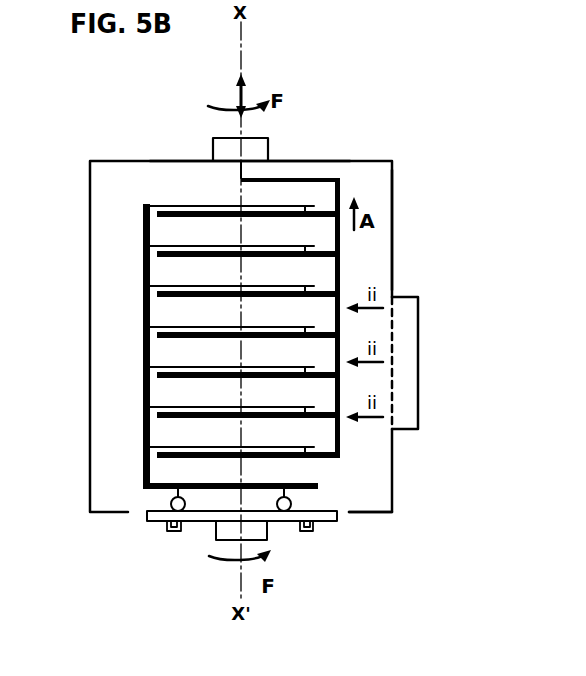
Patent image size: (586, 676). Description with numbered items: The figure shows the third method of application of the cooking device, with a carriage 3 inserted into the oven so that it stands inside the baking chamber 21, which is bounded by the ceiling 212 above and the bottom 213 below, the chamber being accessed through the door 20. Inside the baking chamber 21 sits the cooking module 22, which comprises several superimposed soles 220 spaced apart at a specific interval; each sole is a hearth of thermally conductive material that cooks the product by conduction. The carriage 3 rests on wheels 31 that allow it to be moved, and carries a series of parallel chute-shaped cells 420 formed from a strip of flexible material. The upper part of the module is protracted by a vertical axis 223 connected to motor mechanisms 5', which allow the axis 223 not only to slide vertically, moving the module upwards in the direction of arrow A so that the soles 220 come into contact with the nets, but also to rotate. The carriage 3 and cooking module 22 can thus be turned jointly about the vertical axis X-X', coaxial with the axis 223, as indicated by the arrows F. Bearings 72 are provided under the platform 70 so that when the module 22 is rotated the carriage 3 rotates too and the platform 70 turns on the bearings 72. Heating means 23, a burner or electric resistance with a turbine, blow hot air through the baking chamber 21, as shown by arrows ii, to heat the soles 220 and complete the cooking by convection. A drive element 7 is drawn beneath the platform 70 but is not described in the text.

The door 20 is at (90, 258).
The baking chamber 21 is at (383, 240).
The cooking module 22 is at (352, 250).
The heating means 23 is at (405, 365).
The ceiling 212 is at (365, 160).
The bottom 213 is at (362, 514).
The soles 220 is at (323, 473).
The vertical axis 223 is at (243, 171).
The carriage 3 is at (256, 301).
The wheels 31 is at (170, 503).
The cells 420 is at (200, 205).
The motor mechanisms 5' is at (211, 135).
The drive unit 7 is at (260, 530).
The platform 70 is at (157, 520).
The bearings 72 is at (175, 532).